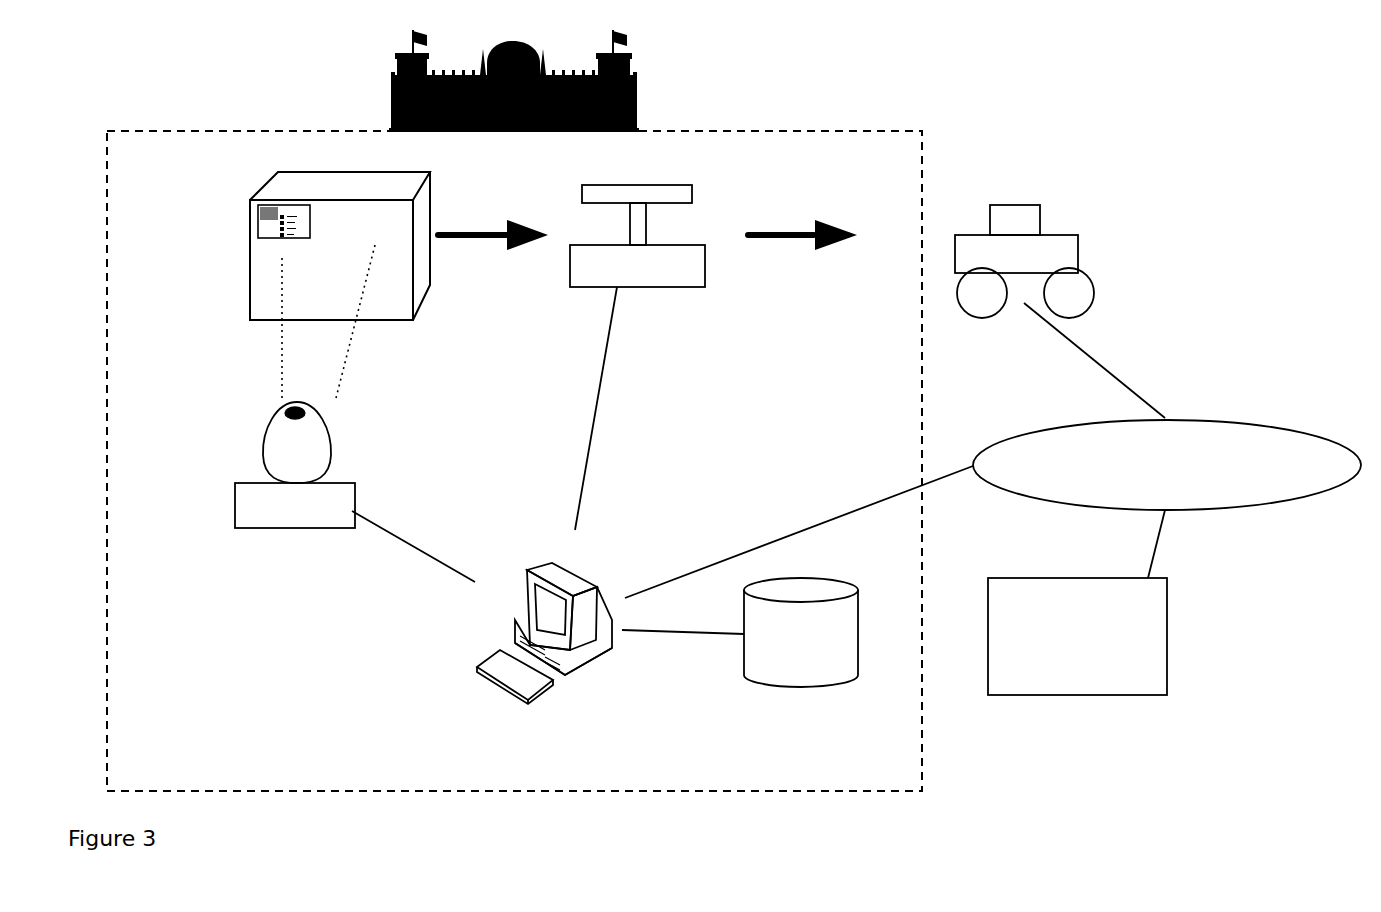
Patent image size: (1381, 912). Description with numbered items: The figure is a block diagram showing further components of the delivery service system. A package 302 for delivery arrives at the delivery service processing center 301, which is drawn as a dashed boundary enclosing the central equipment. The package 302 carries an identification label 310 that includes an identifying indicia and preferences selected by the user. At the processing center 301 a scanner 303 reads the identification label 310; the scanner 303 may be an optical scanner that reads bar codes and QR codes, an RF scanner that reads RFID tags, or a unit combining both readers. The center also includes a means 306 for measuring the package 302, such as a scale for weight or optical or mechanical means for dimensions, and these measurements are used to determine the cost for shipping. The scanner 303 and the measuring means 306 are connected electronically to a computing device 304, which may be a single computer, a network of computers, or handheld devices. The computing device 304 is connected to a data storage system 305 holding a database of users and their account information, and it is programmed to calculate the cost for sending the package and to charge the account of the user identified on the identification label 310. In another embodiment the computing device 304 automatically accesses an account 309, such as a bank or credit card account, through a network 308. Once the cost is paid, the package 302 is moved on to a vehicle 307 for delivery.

The delivery service processing center 301 is at (514, 410).
The package 302 is at (247, 193).
The scanner 303 is at (240, 503).
The computing device 304 is at (482, 607).
The data storage system 305 is at (740, 641).
The means for measuring the package 306 is at (613, 288).
The vehicle 307 is at (1018, 205).
The network 308 is at (993, 509).
The account 309 is at (1102, 636).
The identification label 310 is at (258, 228).